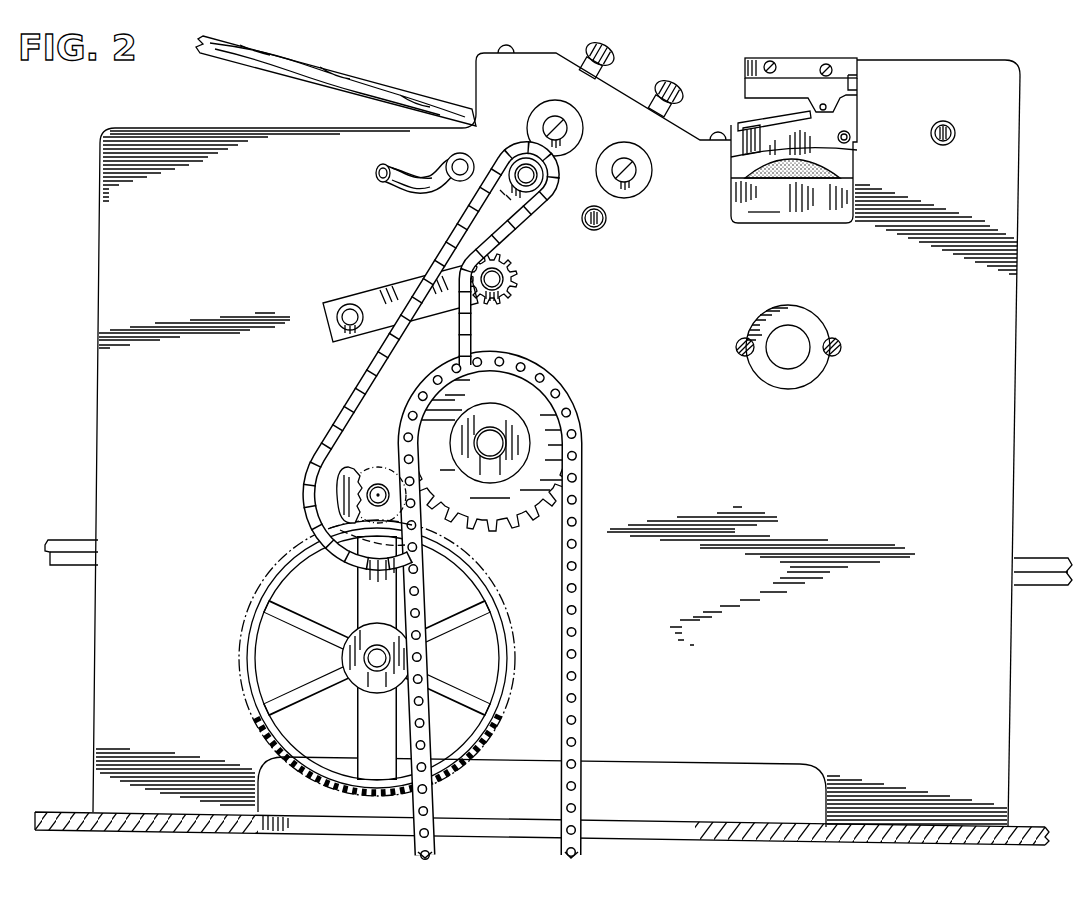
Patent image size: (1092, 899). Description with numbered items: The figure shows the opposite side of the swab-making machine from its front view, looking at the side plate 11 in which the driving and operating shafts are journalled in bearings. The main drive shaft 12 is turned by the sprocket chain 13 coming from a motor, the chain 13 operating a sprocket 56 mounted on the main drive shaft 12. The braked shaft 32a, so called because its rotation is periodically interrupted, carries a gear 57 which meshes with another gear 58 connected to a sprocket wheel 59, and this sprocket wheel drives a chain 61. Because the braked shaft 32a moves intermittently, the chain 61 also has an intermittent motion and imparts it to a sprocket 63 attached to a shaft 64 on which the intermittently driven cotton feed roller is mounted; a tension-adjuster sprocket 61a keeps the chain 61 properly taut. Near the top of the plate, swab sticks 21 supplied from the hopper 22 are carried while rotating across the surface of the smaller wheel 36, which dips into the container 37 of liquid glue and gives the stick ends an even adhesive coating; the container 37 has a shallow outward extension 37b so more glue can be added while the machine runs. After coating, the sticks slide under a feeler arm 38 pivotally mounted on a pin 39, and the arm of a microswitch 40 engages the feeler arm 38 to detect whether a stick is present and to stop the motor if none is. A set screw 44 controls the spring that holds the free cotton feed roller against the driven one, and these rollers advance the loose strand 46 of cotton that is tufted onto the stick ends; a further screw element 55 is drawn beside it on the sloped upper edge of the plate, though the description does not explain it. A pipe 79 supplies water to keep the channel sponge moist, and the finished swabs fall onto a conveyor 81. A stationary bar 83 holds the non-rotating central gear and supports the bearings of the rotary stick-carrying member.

The side plate 11 is at (1003, 501).
The main drive shaft 12 is at (493, 440).
The sprocket chain 13 is at (578, 803).
The swab sticks 21 is at (788, 155).
The hopper 22 is at (1030, 141).
The braked shaft 32a is at (376, 656).
The smaller wheel 36 is at (745, 171).
The container 37 is at (821, 226).
The shallow outward extension 37b is at (758, 214).
The feeler arm 38 is at (733, 126).
The pin 39 is at (850, 137).
The microswitch 40 is at (843, 94).
The set screw 44 is at (608, 58).
The loose strand of cotton 46 is at (349, 88).
The thumb screw 55 is at (692, 77).
The sprocket 56 is at (555, 450).
The gear 57 is at (243, 682).
The gear 58 is at (342, 493).
The sprocket wheel 59 is at (331, 440).
The chain 61 is at (363, 385).
The tension-adjuster sprocket 61a is at (512, 292).
The sprocket 63 is at (516, 196).
The shaft 64 is at (521, 170).
The pipe 79 is at (420, 190).
The conveyor 81 is at (1027, 560).
The stationary bar 83 is at (792, 365).